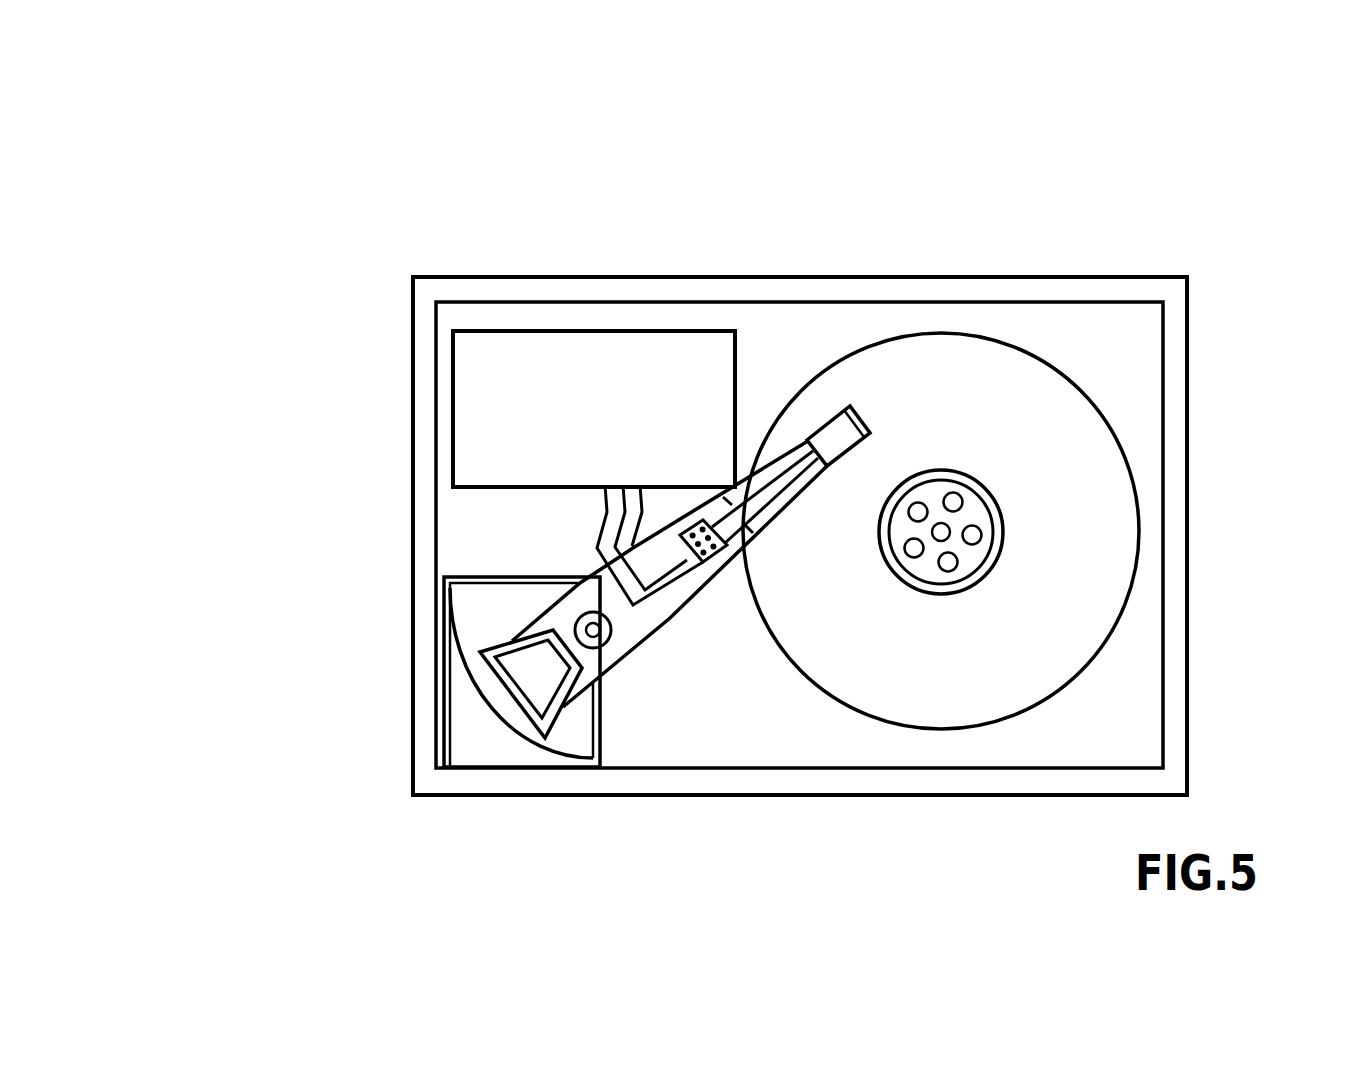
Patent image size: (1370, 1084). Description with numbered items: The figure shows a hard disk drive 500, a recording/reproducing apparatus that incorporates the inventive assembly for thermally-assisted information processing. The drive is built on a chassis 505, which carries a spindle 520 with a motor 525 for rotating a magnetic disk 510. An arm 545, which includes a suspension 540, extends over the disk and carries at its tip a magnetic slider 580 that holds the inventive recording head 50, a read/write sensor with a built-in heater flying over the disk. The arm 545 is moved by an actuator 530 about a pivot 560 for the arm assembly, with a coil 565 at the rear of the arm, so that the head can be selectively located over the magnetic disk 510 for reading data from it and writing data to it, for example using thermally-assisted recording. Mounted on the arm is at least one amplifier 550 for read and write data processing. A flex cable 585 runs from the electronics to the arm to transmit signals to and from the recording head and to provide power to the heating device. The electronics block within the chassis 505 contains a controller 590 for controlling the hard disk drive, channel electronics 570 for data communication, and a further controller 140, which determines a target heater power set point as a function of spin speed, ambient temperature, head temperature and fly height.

The hard disk drive 500 is at (283, 846).
The chassis 505 is at (1176, 407).
The magnetic disk 510 is at (1119, 631).
The spindle 520 is at (948, 530).
The motor 525 is at (983, 522).
The actuator 530 is at (505, 765).
The suspension 540 is at (740, 520).
The arm 545 is at (670, 617).
The amplifier 550 is at (683, 535).
The pivot 560 is at (573, 628).
The coil 565 is at (478, 665).
The channel electronics 570 is at (581, 401).
The magnetic slider 580 is at (832, 430).
The flex cable 585 is at (733, 492).
The controller 590 is at (594, 409).
The controller 140 is at (578, 455).
The recording head 50 is at (862, 417).